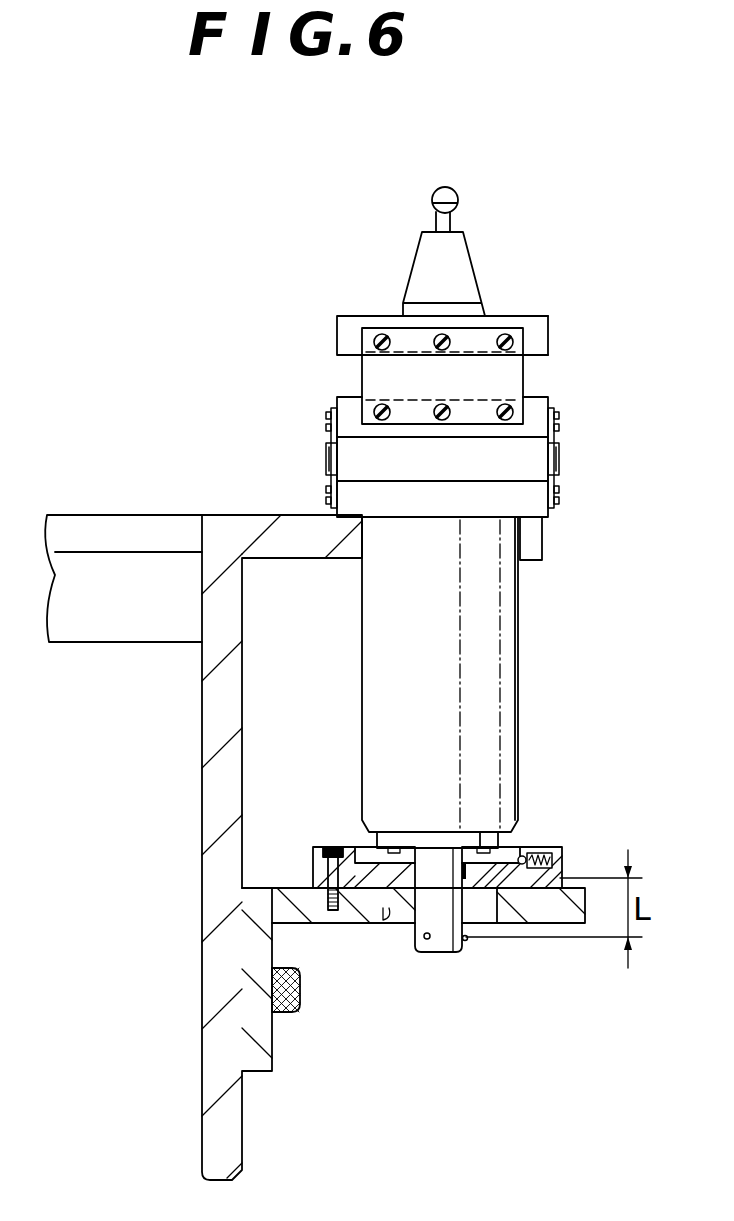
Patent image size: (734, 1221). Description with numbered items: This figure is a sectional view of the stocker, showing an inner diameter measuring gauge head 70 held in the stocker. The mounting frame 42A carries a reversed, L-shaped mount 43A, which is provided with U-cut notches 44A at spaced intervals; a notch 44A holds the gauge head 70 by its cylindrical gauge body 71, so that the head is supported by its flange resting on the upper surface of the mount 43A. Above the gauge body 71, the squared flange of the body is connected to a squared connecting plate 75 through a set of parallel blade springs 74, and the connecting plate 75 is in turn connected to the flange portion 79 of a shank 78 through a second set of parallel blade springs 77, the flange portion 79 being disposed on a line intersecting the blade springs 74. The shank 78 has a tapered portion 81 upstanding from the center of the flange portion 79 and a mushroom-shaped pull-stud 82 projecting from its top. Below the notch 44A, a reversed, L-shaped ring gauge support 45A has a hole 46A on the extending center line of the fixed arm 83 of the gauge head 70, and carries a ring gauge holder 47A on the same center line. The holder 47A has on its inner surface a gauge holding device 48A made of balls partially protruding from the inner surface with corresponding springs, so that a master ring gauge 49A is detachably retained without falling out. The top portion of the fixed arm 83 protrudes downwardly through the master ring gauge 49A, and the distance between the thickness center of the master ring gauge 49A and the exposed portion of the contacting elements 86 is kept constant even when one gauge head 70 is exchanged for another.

The mounting frame 42A is at (86, 490).
The mount 43A is at (239, 525).
The U-cut notch 44A is at (362, 543).
The ring gauge support 45A is at (287, 893).
The hole 46A is at (386, 909).
The ring gauge holder 47A is at (565, 858).
The gauge holding device 48A is at (540, 857).
The master ring gauge 49A is at (500, 873).
The inner diameter measuring gauge head 70 is at (572, 402).
The gauge body 71 is at (502, 663).
The blade springs 74 is at (331, 437).
The connecting plate 75 is at (341, 406).
The blade springs 77 is at (392, 336).
The shank 78 is at (510, 306).
The flange portion 79 is at (549, 326).
The tapered portion 81 is at (464, 281).
The pull-stud 82 is at (457, 197).
The fixed arm 83 is at (444, 953).
The contacting elements 86 is at (427, 941).